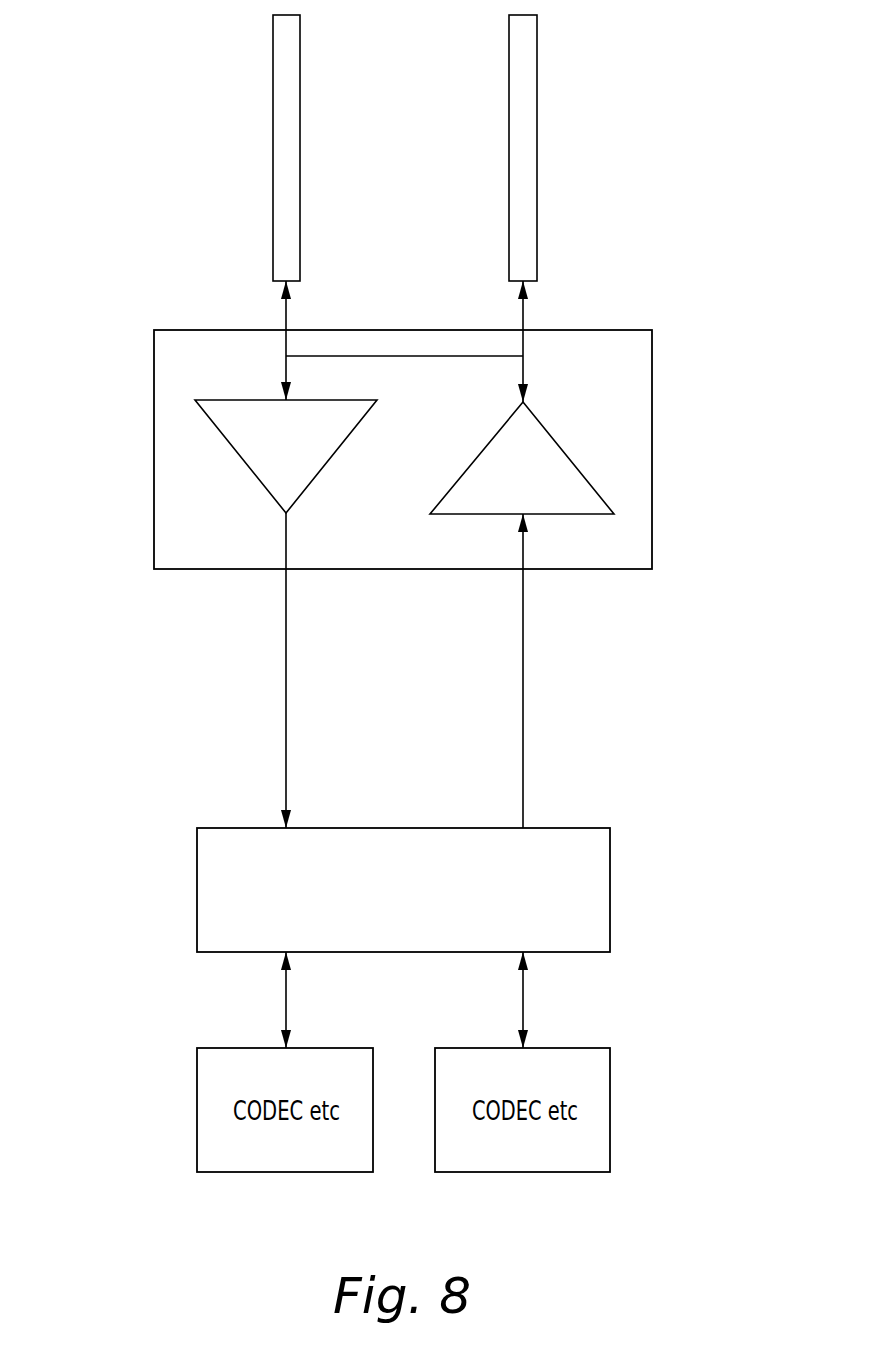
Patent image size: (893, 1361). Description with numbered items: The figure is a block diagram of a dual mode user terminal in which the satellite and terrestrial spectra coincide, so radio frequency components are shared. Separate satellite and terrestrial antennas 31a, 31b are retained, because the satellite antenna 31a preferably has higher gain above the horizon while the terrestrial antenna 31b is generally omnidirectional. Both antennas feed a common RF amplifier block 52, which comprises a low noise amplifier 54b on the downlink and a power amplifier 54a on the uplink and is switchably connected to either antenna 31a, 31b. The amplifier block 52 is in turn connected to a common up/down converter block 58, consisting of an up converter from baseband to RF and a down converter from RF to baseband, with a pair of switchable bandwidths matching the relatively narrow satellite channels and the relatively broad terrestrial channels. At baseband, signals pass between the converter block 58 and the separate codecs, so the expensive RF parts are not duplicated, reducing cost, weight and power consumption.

The satellite antenna 31a is at (273, 58).
The terrestrial antenna 31b is at (537, 67).
The common RF amplifier block 52 is at (404, 449).
The power amplifier 54a is at (582, 470).
The low noise amplifier 54b is at (230, 444).
The common up/down converter block 58 is at (610, 870).